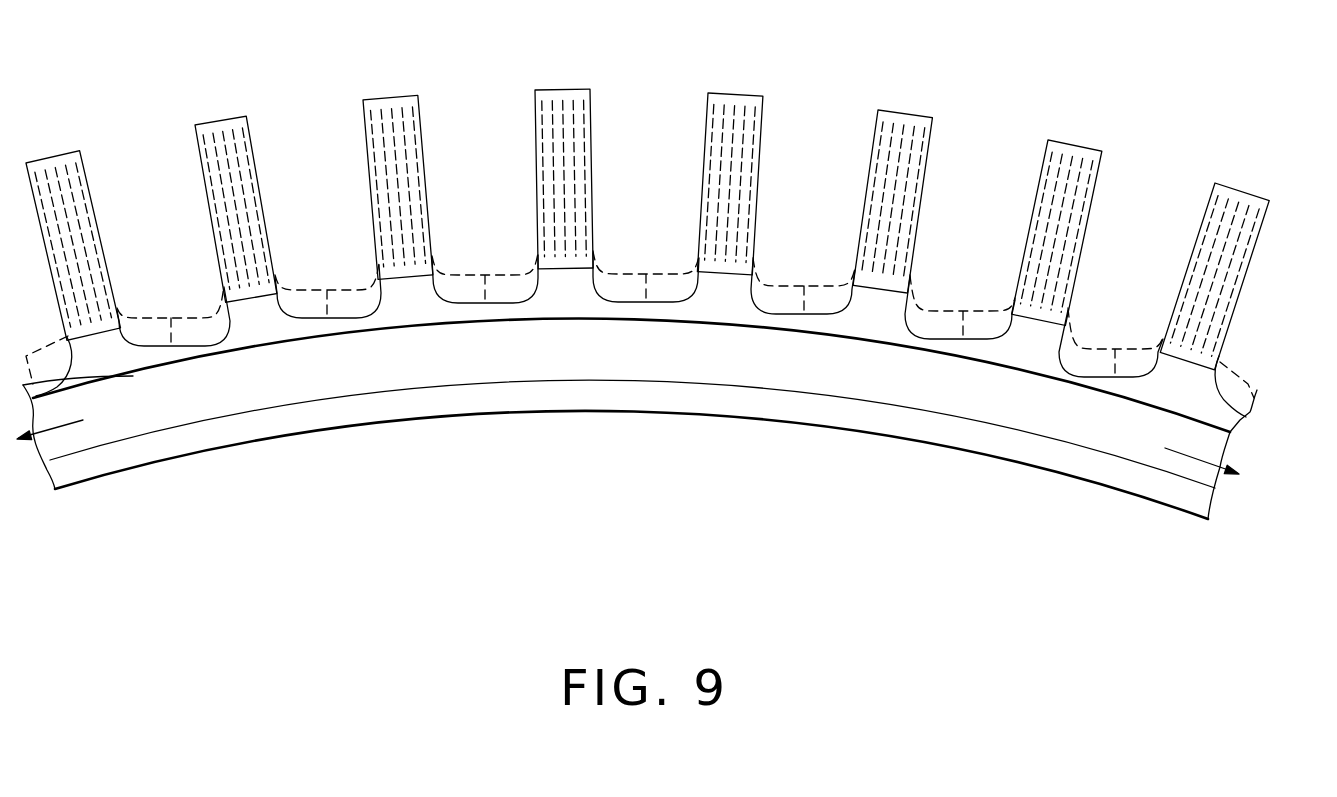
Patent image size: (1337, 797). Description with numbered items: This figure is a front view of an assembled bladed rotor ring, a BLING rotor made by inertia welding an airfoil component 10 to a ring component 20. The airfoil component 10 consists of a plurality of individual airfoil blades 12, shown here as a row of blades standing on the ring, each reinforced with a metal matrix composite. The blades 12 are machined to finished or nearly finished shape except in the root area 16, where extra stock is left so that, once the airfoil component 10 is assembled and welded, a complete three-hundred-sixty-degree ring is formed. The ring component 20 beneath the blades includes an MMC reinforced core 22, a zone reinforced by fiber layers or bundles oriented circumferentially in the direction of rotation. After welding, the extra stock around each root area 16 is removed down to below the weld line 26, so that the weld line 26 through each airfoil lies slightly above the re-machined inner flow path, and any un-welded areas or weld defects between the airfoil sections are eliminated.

The airfoil component 10 is at (226, 479).
The airfoil blades 12 is at (247, 115).
The root area 16 is at (663, 262).
The ring component 20 is at (936, 448).
The MMC reinforced core 22 is at (806, 398).
The weld line 26 is at (61, 338).